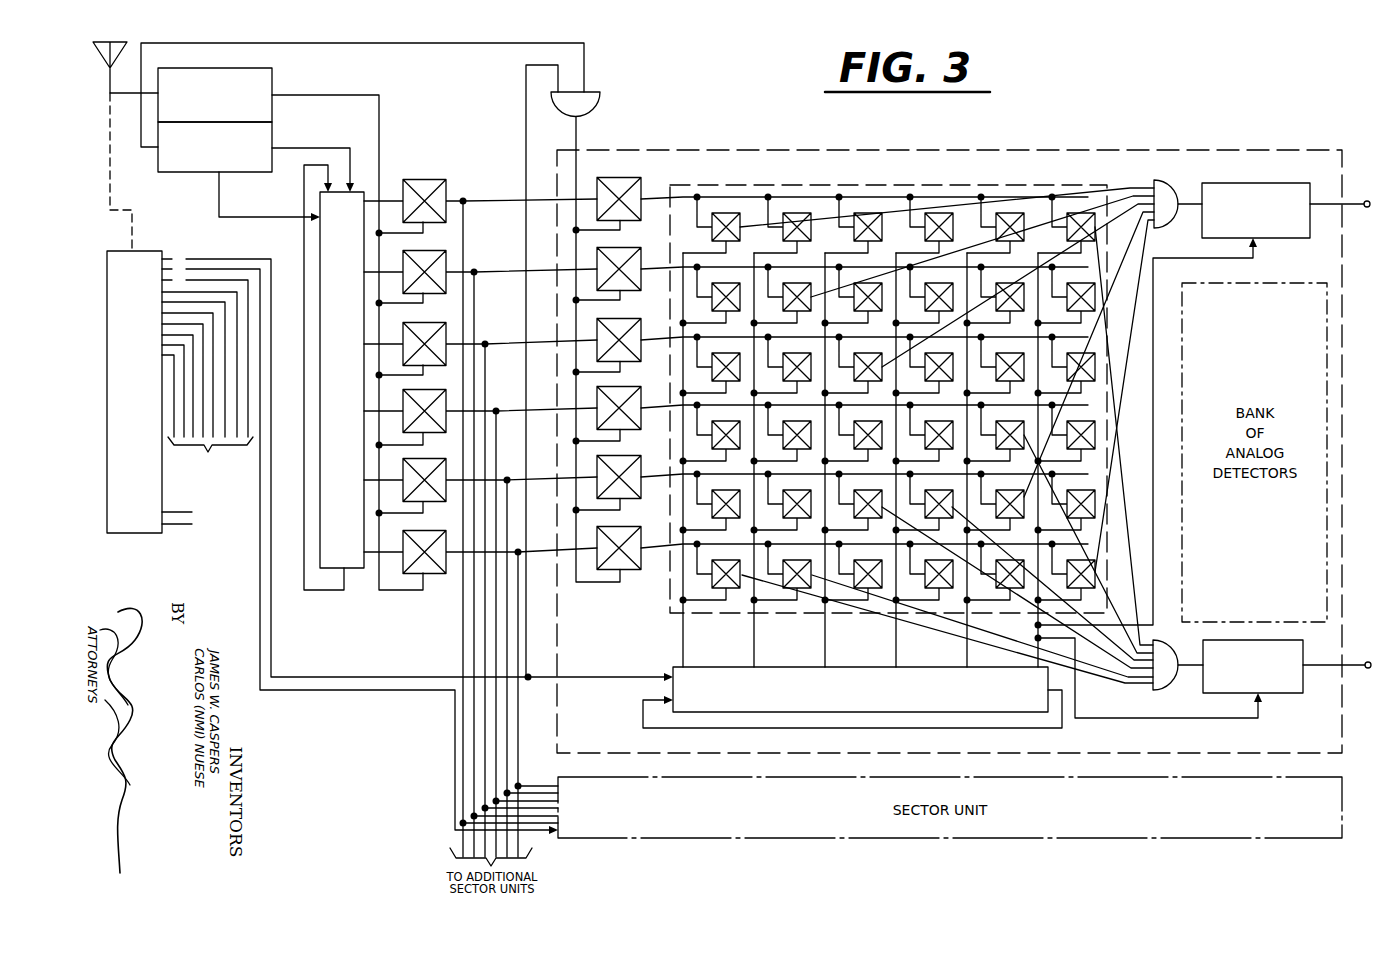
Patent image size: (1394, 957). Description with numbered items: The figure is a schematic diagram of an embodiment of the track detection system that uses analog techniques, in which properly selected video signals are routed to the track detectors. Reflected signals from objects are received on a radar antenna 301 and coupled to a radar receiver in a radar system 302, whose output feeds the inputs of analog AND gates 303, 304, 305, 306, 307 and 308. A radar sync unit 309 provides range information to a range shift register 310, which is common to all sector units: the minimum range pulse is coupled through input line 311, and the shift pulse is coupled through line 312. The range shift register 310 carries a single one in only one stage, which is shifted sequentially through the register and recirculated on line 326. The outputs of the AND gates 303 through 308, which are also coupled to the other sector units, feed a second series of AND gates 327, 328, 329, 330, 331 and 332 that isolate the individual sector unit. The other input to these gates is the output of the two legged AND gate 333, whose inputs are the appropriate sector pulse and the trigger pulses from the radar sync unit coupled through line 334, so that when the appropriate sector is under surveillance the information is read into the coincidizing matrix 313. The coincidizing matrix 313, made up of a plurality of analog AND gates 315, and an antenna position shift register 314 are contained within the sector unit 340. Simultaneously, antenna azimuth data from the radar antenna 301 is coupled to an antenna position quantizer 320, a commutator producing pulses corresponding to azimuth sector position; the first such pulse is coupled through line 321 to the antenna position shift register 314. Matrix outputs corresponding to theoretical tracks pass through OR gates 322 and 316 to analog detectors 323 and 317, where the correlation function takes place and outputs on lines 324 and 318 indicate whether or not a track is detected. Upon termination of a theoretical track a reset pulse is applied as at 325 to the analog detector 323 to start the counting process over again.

The radar antenna 301 is at (110, 42).
The radar system 302 is at (272, 90).
The analog AND gate 303 is at (446, 182).
The analog AND gate 304 is at (446, 244).
The analog AND gate 305 is at (422, 322).
The analog AND gate 306 is at (462, 383).
The analog AND gate 307 is at (462, 452).
The analog AND gate 308 is at (462, 524).
The radar sync unit 309 is at (190, 172).
The range shift register 310 is at (357, 569).
The input line 311 is at (355, 150).
The line 312 is at (260, 224).
The coincidizing matrix 313 is at (770, 186).
The antenna position shift register 314 is at (810, 668).
The analog AND gate 315 is at (708, 220).
The OR gate 316 is at (1162, 652).
The analog detector 317 is at (1270, 695).
The output line 318 is at (1352, 665).
The antenna position quantizer 320 is at (132, 251).
The line 321 is at (614, 676).
The OR gate 322 is at (1180, 176).
The analog detector 323 is at (1262, 183).
The output line 324 is at (1352, 204).
The reset pulse input 325 is at (1034, 625).
The recirculation line 326 is at (310, 600).
The AND gate 327 is at (615, 177).
The AND gate 328 is at (615, 247).
The AND gate 329 is at (618, 318).
The AND gate 330 is at (615, 386).
The AND gate 331 is at (615, 455).
The AND gate 332 is at (617, 526).
The AND gate 333 is at (588, 110).
The line 334 is at (586, 76).
The sector unit 340 is at (780, 150).